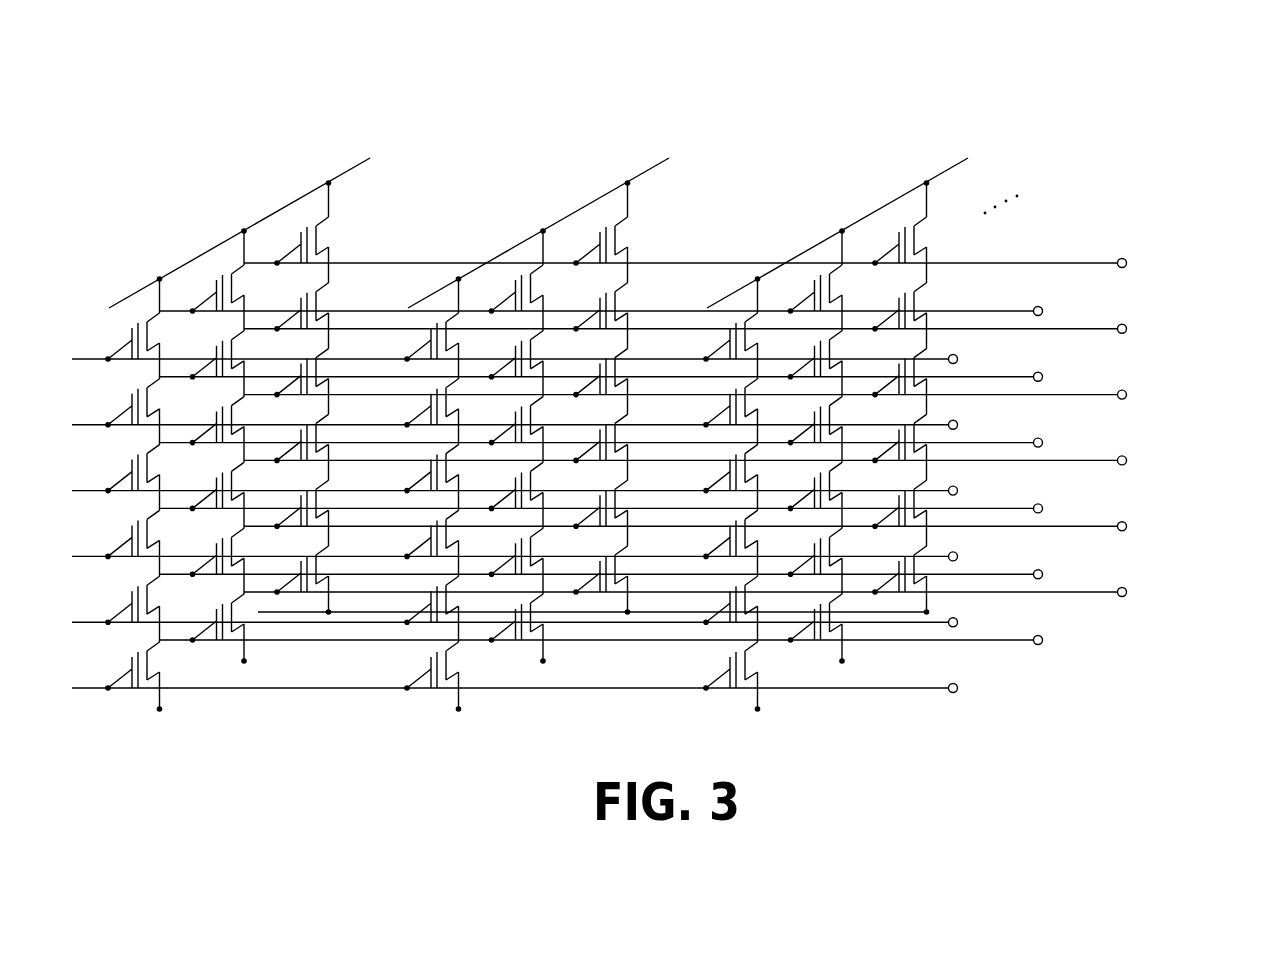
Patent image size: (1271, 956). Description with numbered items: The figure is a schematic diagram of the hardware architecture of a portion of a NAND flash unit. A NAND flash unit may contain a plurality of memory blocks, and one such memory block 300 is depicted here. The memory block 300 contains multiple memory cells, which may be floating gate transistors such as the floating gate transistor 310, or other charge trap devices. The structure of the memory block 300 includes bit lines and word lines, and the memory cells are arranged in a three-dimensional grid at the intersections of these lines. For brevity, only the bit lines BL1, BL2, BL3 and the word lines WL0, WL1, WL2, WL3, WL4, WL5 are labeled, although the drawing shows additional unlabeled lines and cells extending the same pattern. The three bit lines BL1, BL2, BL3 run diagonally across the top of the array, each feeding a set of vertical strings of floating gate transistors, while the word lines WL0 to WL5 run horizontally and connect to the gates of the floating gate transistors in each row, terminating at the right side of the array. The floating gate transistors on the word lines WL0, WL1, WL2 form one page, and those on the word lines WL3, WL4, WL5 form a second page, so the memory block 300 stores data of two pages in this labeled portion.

The memory block 300 is at (1071, 123).
The floating gate transistor 310 is at (132, 340).
The bit line BL1 is at (348, 163).
The bit line BL2 is at (647, 163).
The bit line BL3 is at (946, 163).
The word line WL0 is at (958, 359).
The word line WL1 is at (1043, 311).
The word line WL2 is at (1127, 263).
The word line WL3 is at (958, 425).
The word line WL4 is at (1043, 377).
The word line WL5 is at (1127, 329).